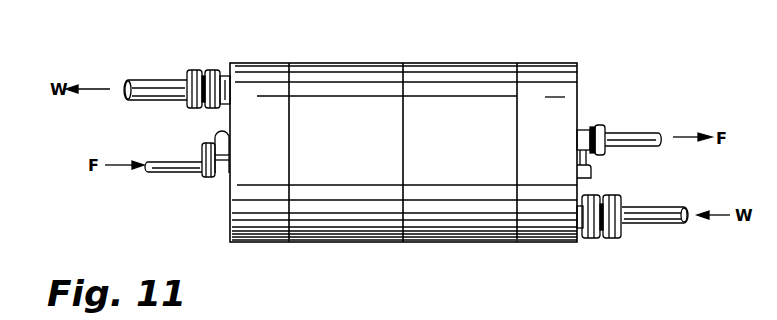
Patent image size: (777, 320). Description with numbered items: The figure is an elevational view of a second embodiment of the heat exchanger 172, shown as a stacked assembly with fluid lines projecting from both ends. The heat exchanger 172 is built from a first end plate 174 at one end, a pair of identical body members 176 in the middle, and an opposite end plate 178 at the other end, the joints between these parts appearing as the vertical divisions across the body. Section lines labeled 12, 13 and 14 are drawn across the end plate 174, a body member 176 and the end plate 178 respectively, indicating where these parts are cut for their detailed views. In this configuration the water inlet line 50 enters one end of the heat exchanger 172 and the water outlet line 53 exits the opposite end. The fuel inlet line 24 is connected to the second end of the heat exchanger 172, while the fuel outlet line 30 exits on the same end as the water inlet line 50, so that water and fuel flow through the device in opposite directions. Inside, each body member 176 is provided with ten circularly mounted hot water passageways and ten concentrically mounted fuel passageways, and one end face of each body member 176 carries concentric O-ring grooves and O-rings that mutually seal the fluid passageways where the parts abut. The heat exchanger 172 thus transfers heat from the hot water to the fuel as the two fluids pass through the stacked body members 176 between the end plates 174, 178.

The section line 12- 12 is at (282, 75).
The section line 13- 13 is at (403, 63).
The section line 14- 14 is at (517, 63).
The fuel inlet line 24 is at (183, 172).
The fuel outlet line 30 is at (616, 135).
The water inlet line 50 is at (645, 223).
The water outlet line 53 is at (180, 88).
The heat exchanger 172 is at (601, 267).
The first end plate 174 is at (250, 243).
The body members 176 is at (322, 243).
The opposite end plate 178 is at (550, 243).